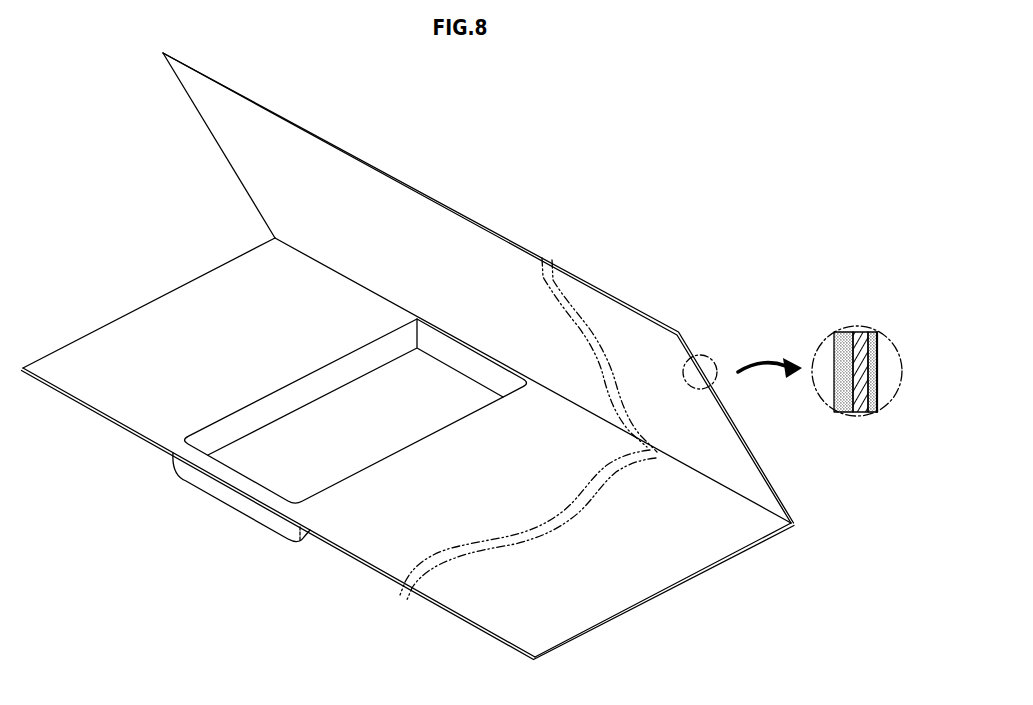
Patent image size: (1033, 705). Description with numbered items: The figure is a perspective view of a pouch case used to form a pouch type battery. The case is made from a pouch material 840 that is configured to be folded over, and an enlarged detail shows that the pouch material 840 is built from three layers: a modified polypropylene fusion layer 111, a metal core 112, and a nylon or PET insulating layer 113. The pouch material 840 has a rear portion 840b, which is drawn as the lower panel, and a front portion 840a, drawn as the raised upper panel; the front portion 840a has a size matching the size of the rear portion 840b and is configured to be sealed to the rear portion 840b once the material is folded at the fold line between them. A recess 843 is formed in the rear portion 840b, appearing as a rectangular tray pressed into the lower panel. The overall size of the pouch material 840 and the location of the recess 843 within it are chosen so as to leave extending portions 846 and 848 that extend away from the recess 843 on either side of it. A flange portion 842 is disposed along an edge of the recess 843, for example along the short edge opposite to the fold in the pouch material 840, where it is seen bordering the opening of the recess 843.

The pouch material 840 is at (203, 140).
The front portion 840a is at (263, 220).
The rear portion 840b is at (260, 252).
The flange portion 842 is at (220, 479).
The recess 843 is at (262, 515).
The extending portion 846 is at (115, 342).
The extending portion 848 is at (658, 568).
The modified polypropylene fusion layer 111 is at (842, 333).
The metal core 112 is at (860, 332).
The nylon or PET insulating layer 113 is at (870, 333).